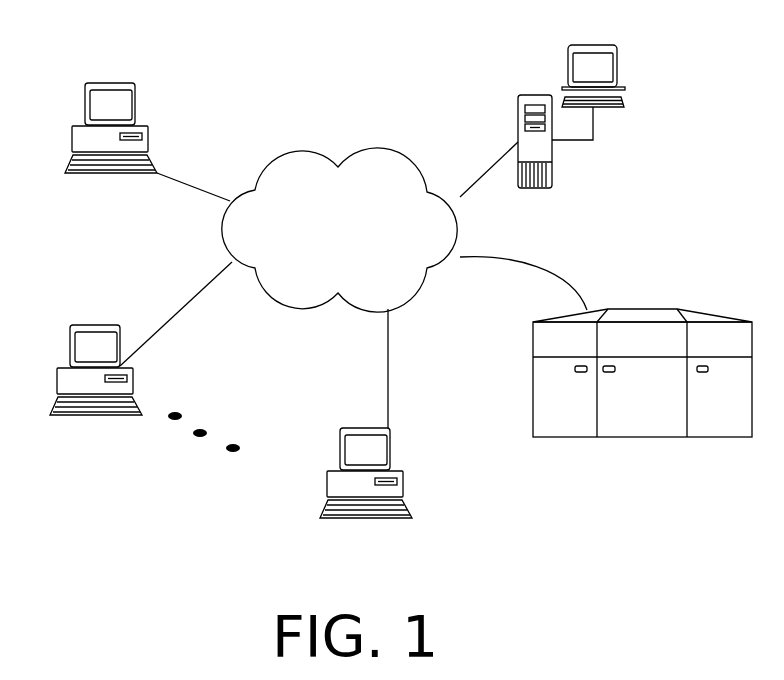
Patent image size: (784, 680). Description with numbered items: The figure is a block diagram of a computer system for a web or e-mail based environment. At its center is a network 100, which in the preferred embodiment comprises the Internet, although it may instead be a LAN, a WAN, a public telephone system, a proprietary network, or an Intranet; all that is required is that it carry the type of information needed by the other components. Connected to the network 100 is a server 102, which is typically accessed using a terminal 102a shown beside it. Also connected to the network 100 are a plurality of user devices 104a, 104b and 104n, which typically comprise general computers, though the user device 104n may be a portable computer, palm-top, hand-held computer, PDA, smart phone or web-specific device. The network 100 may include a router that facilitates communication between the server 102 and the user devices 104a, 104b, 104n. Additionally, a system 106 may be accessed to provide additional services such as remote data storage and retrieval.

The network 100 is at (341, 156).
The server 102 is at (506, 117).
The server console / laptop computer 102a is at (636, 72).
The user device 104a is at (74, 106).
The user device 104b is at (59, 350).
The user device 104n is at (328, 465).
The system 106 is at (644, 296).